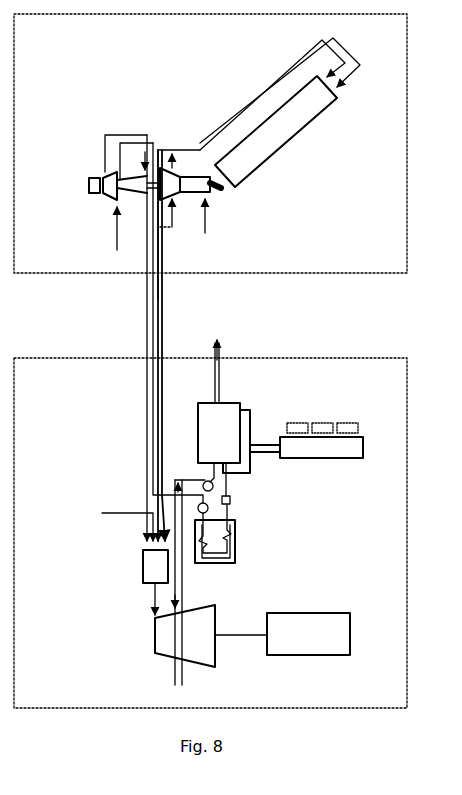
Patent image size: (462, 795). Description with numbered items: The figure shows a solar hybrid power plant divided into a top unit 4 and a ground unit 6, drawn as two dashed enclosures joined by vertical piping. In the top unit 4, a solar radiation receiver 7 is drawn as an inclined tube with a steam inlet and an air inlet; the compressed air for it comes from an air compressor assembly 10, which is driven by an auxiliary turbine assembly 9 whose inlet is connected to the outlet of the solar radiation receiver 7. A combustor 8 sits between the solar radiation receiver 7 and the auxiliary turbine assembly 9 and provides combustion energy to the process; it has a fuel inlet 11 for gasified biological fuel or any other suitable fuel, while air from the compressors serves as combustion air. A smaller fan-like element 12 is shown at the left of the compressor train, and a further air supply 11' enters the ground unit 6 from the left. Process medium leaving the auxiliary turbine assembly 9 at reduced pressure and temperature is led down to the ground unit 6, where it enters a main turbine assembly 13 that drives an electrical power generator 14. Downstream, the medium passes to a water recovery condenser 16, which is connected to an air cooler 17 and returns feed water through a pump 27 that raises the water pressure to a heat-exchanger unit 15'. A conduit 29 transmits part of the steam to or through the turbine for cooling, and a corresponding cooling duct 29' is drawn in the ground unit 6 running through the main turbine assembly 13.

The top unit 4 is at (407, 157).
The ground unit 6 is at (407, 531).
The solar radiation receiver 7 is at (282, 130).
The combustor 8 is at (195, 177).
The auxiliary turbine assembly 9 is at (164, 181).
The air compressor assembly 10 is at (98, 120).
The fuel inlet 11 is at (228, 216).
The compressed air supply 11' is at (119, 538).
The fan / auxiliary compressor 12 is at (110, 224).
The main turbine assembly 13 is at (192, 640).
The electrical power generator 14 is at (317, 623).
The heat exchanger 15' is at (245, 533).
The water recovery condenser 16 is at (222, 423).
The air cooler 17 is at (335, 450).
The pump 27 is at (233, 502).
The conduit 29 is at (181, 230).
The cooling air duct 29' is at (194, 582).